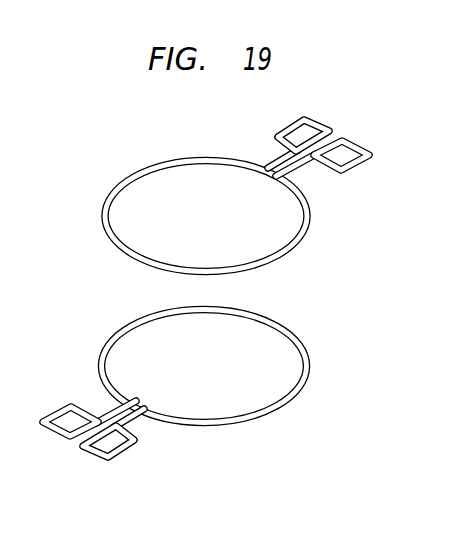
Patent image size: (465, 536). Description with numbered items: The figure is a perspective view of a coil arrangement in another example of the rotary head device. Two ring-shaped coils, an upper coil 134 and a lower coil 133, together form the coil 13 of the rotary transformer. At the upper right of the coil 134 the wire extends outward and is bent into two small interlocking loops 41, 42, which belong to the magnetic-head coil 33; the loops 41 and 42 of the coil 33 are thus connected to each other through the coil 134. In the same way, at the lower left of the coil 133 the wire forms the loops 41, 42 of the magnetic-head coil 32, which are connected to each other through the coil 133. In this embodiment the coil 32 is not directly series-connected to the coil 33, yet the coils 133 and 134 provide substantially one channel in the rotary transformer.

The coil 13 is at (255, 292).
The coil 133 is at (239, 366).
The coil 134 is at (305, 235).
The coil 32 is at (64, 447).
The coil 33 is at (344, 124).
The loop 41 is at (350, 157).
The loop 42 is at (308, 128).